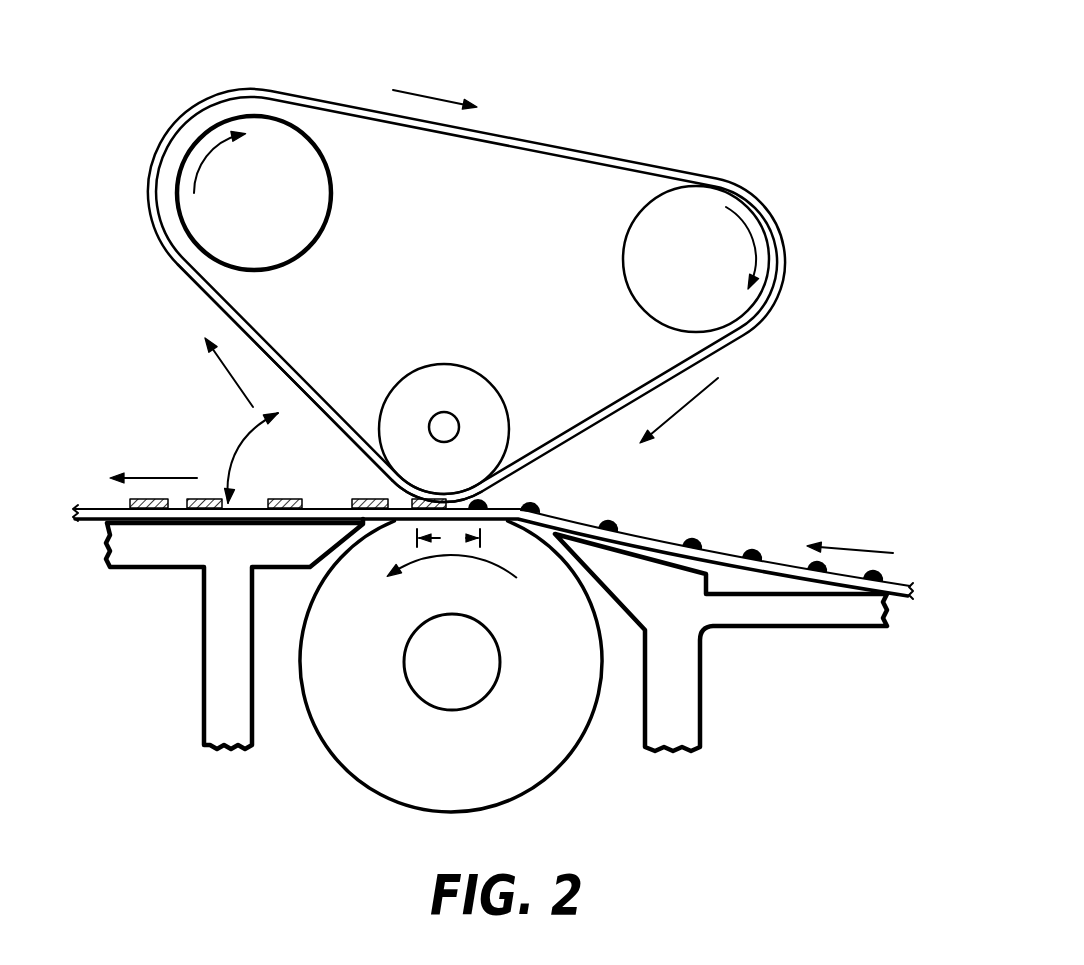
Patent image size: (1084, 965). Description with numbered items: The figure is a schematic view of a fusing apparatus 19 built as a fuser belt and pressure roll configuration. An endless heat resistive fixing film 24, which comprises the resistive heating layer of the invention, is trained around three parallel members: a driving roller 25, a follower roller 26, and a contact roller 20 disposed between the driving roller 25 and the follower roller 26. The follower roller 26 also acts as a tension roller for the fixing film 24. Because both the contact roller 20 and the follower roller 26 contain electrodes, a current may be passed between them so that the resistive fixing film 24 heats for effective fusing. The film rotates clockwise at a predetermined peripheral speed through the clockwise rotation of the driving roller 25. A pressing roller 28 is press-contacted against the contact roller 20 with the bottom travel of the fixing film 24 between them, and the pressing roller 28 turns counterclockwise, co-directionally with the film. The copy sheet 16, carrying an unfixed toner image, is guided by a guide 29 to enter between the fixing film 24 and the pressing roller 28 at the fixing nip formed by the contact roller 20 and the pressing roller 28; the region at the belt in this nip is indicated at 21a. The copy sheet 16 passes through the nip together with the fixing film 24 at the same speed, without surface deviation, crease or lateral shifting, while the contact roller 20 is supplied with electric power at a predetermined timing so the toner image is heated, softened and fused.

The copy sheet 16 is at (91, 506).
The fusing apparatus 19 is at (880, 418).
The contact roller 20 is at (497, 420).
The nip region 21a is at (483, 481).
The fixing film 24 is at (332, 101).
The driving roller 25 is at (273, 140).
The follower roller 26 is at (702, 202).
The pressing roller 28 is at (553, 760).
The guide 29 is at (748, 617).